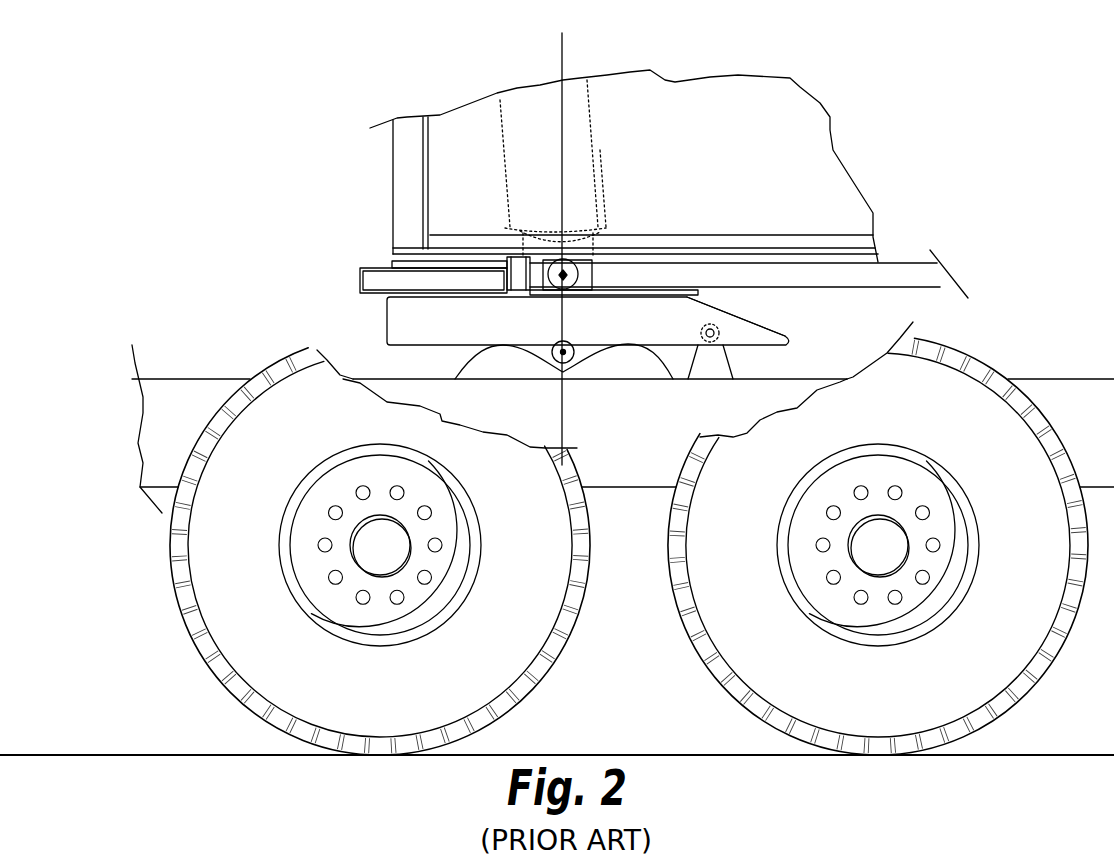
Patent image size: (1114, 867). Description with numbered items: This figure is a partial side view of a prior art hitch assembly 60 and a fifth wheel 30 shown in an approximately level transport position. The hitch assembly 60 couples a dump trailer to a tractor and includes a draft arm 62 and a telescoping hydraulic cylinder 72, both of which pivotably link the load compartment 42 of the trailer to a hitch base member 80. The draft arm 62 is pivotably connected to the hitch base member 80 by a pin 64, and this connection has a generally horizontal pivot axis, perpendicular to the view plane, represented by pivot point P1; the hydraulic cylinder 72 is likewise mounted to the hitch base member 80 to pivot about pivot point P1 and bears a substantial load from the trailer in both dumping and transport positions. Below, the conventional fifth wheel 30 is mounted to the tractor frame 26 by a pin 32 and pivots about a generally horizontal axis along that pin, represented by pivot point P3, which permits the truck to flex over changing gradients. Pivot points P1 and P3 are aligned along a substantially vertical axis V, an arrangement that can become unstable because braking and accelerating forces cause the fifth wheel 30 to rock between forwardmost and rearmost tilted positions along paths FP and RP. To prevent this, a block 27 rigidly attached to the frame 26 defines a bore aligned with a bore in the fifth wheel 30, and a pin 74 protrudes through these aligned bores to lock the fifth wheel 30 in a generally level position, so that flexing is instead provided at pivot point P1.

The frame 26 is at (178, 379).
The block 27 is at (715, 372).
The fifth wheel 30 is at (387, 313).
The pin 32 is at (548, 363).
The load compartment 42 is at (393, 190).
The hitch assembly 60 is at (378, 263).
The draft arm 62 is at (917, 265).
The pin 64 is at (591, 281).
The telescoping hydraulic cylinder 72 is at (503, 196).
The pin 74 is at (718, 337).
The hitch base member 80 is at (361, 271).
The pivot point P1 is at (546, 277).
The pivot point P3 is at (572, 360).
The path FP is at (403, 379).
The path RP is at (773, 379).
The vertical axis V is at (562, 73).